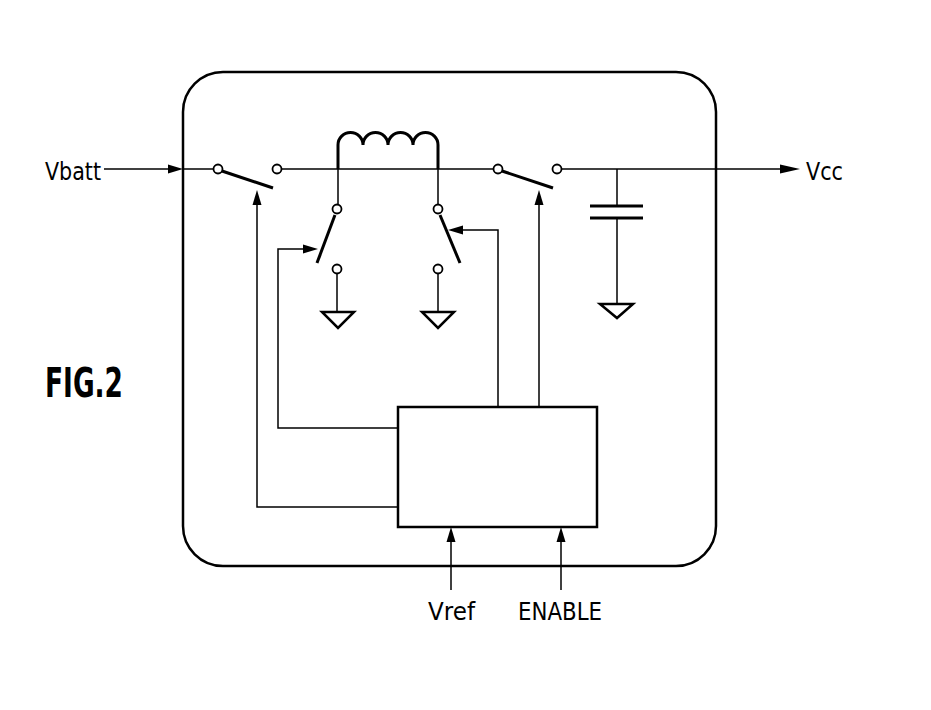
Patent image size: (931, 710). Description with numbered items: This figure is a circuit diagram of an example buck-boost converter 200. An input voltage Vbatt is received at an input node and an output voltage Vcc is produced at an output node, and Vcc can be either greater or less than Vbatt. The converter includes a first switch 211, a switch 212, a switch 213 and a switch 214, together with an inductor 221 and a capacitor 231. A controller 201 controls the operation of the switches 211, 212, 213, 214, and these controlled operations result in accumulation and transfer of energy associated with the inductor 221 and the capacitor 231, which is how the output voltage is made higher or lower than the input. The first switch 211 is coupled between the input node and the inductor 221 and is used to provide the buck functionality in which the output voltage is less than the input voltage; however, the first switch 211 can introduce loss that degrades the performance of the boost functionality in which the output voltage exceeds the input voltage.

The buck-boost converter 200 is at (490, 72).
The controller 201 is at (597, 477).
The first switch 211 is at (252, 142).
The switch 212 is at (346, 237).
The switch 213 is at (431, 243).
The switch 214 is at (528, 147).
The inductor 221 is at (375, 132).
The capacitor 231 is at (635, 220).